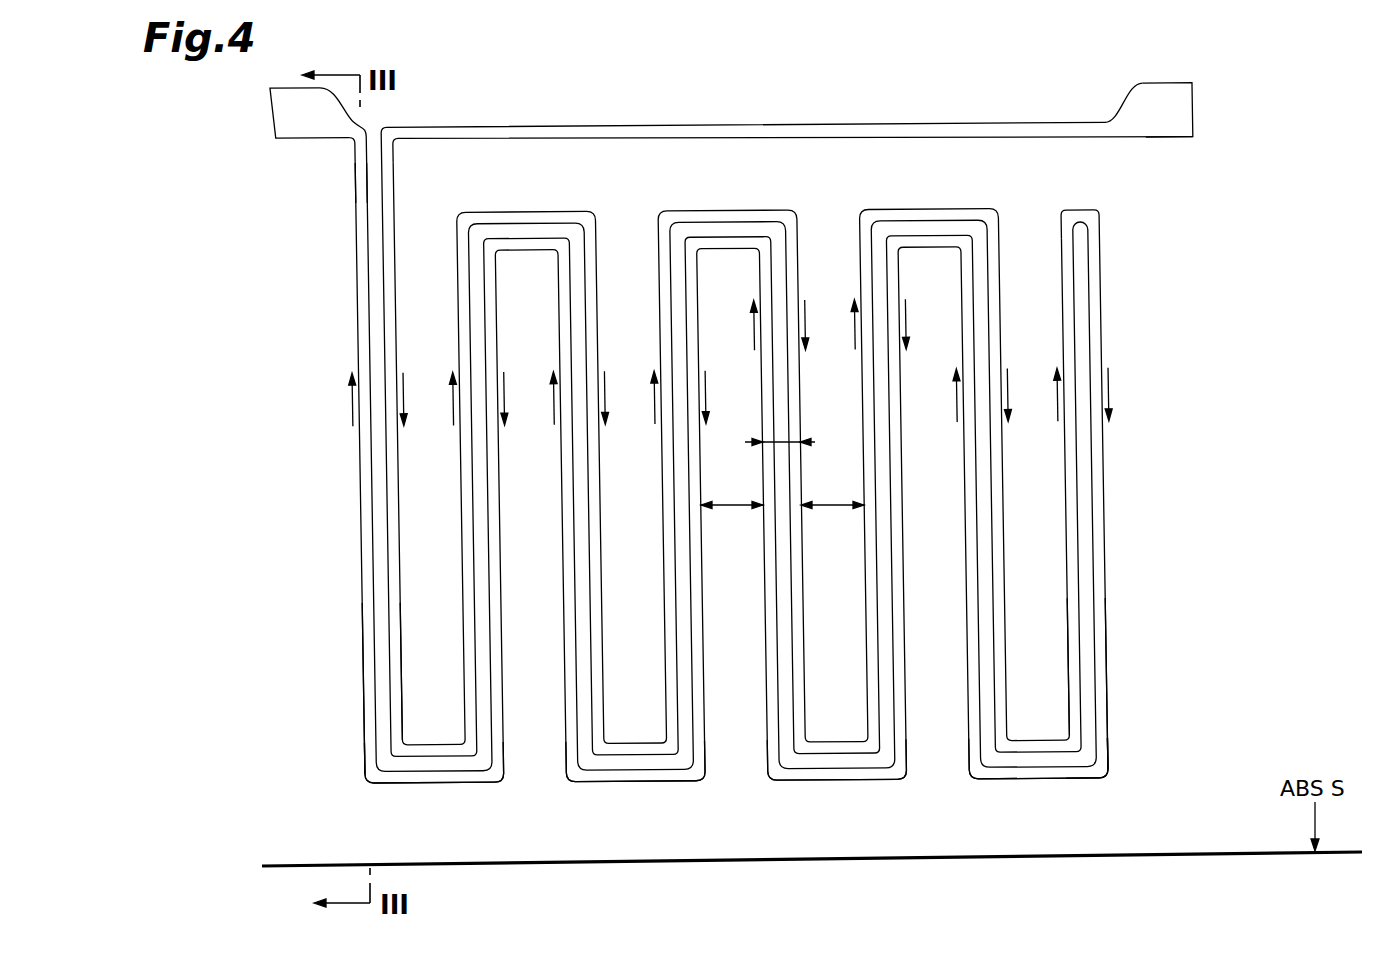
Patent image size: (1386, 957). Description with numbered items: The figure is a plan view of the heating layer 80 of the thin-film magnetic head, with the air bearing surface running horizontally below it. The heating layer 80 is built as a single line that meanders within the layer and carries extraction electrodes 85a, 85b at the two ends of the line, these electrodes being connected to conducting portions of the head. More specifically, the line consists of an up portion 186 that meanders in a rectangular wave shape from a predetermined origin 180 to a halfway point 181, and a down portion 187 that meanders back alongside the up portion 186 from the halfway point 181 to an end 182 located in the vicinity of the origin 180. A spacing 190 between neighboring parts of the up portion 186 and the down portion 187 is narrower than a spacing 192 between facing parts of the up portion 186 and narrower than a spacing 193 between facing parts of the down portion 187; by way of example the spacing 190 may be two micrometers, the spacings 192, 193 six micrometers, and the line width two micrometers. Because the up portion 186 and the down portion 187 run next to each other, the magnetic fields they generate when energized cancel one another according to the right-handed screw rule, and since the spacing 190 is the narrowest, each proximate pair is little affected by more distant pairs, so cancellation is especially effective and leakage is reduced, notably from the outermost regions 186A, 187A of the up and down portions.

The heating layer 80 is at (1126, 770).
The extraction electrode 85a is at (290, 124).
The extraction electrode 85b is at (1166, 121).
The origin 180 is at (393, 190).
The halfway point 181 is at (1082, 210).
The end 182 is at (358, 193).
The up portion 186 is at (388, 295).
The outermost region of the up portion 186A is at (402, 660).
The down portion 187 is at (532, 832).
The outermost region of the down portion 187A is at (368, 672).
The spacing 190 is at (782, 442).
The spacing 192 is at (828, 506).
The spacing 193 is at (733, 506).